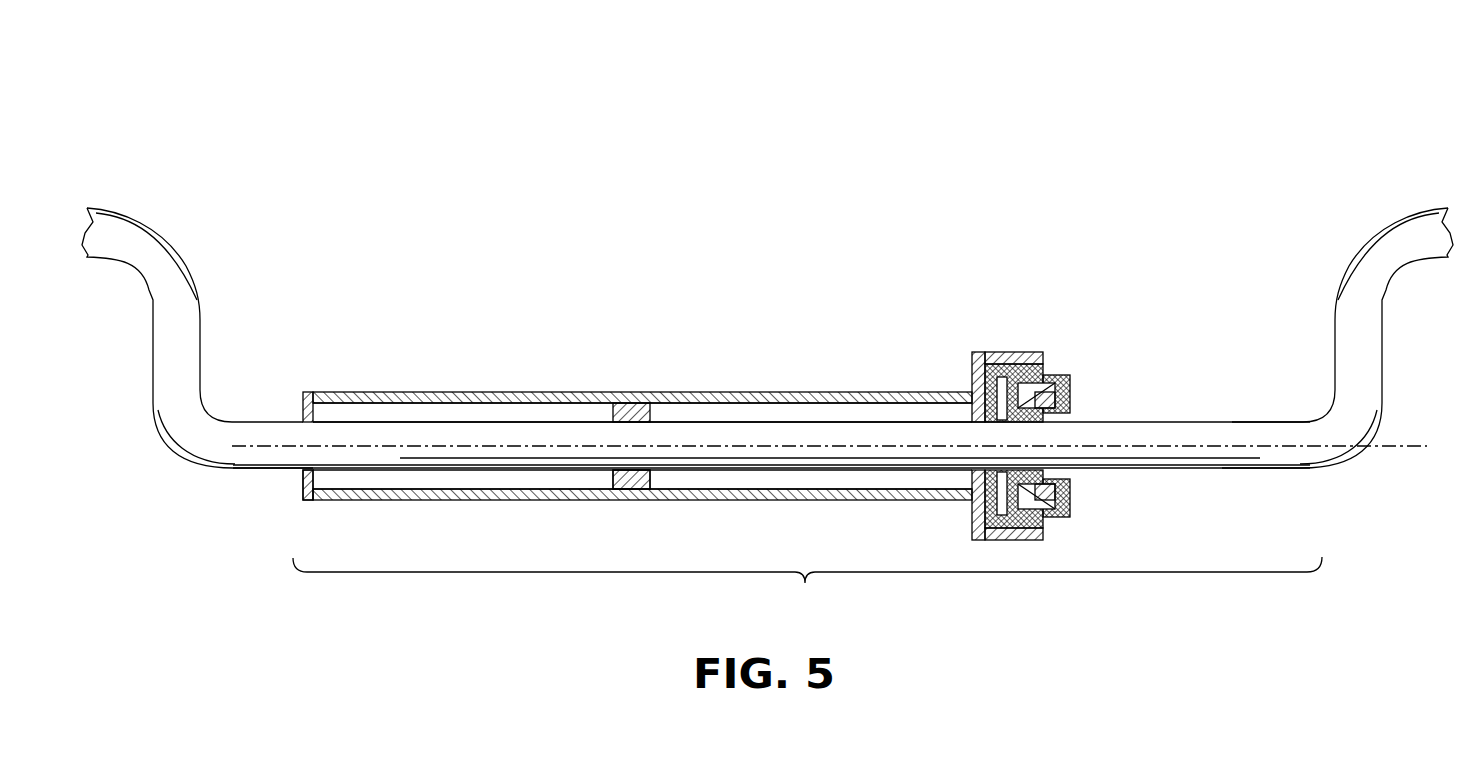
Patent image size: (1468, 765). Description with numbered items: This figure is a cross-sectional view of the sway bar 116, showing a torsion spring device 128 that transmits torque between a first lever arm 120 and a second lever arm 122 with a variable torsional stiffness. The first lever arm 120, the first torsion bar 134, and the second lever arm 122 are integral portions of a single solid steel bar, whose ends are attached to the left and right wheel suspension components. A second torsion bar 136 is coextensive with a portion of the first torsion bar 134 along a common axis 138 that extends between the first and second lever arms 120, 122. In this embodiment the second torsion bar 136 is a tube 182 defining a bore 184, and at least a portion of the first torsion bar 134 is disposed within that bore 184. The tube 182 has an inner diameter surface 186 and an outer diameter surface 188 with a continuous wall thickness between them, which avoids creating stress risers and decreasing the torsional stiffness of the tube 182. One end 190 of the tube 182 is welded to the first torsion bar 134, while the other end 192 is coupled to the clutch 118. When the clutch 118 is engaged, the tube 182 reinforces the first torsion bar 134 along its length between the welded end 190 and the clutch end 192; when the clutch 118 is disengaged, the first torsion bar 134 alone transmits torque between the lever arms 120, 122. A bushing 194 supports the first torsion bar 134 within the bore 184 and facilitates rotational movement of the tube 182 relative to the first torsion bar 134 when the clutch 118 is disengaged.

The sway bar 116 is at (129, 165).
The clutch 118 is at (971, 335).
The first lever arm 120 is at (1384, 348).
The second lever arm 122 is at (201, 335).
The torsion spring device 128 is at (781, 464).
The first torsion bar 134 is at (1161, 419).
The second torsion bar 136 is at (299, 390).
The common axis 138 is at (1392, 446).
The tube 182 is at (505, 398).
The bore 184 is at (724, 411).
The inner diameter surface 186 is at (544, 408).
The outer diameter surface 188 is at (613, 392).
The end of tube welded to first torsion bar 190 is at (300, 482).
The end of tube coupled to clutch 192 is at (968, 393).
The bushing 194 is at (648, 478).